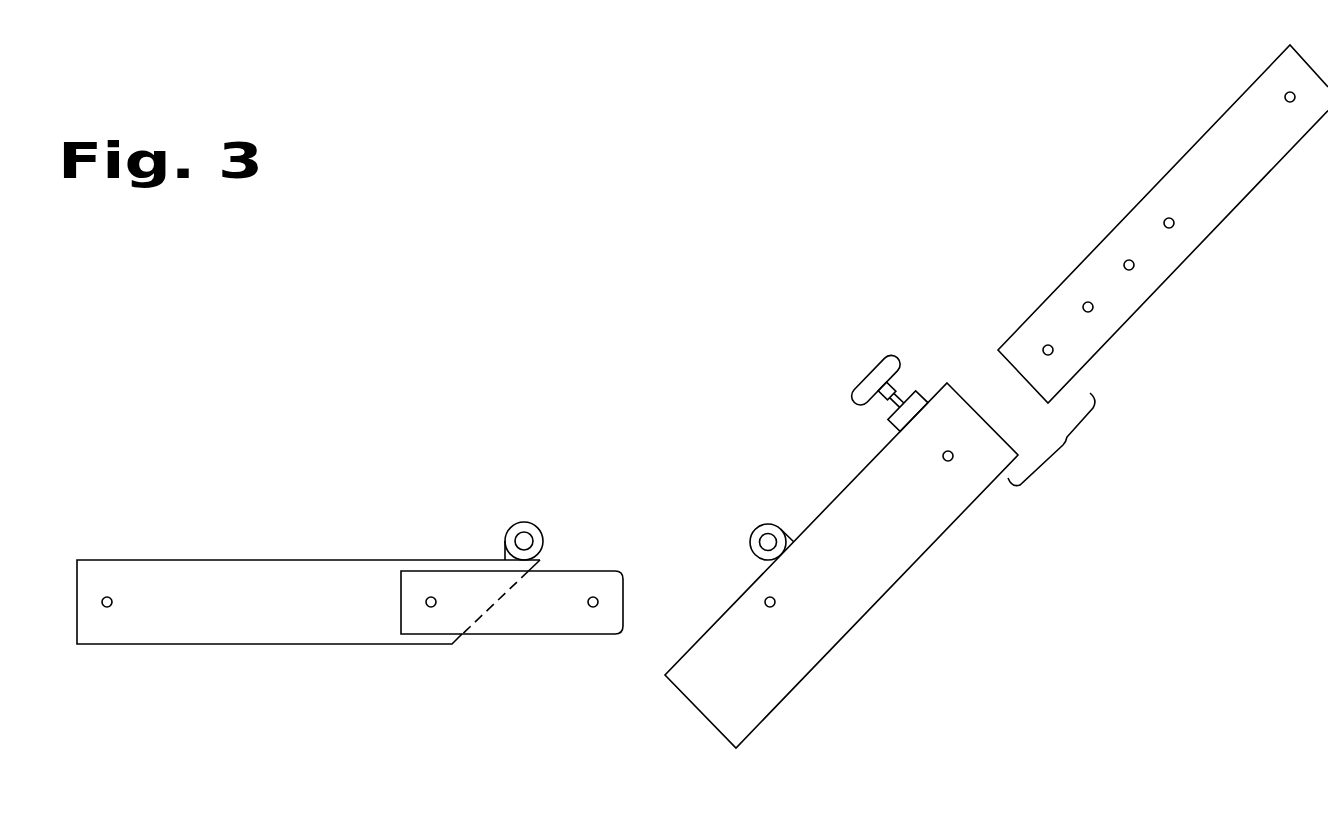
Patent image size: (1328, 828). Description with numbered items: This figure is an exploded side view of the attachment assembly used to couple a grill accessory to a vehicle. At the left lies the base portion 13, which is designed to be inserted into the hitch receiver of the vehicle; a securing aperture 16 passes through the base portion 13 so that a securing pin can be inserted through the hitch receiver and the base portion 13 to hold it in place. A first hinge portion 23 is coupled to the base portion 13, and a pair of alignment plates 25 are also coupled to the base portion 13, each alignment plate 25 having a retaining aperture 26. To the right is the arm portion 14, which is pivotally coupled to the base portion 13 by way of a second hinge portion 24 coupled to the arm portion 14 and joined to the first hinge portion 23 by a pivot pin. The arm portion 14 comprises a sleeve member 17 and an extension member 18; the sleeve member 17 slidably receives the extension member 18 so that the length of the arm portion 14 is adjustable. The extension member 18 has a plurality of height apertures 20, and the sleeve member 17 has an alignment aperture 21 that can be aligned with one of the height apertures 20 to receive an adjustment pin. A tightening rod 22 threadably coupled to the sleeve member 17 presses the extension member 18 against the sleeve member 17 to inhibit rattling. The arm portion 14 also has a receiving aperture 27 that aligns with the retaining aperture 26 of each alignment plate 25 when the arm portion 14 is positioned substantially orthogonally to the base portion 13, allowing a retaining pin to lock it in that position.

The base portion 13 is at (252, 593).
The securing aperture 16 is at (112, 600).
The first hinge portion 23 is at (524, 532).
The alignment plates 25 is at (530, 602).
The retaining aperture 26 is at (598, 600).
The sleeve member 17 is at (898, 525).
The receiving aperture 27 is at (775, 604).
The second hinge portion 24 is at (768, 535).
The alignment aperture 21 is at (948, 451).
The tightening rod 22 is at (885, 378).
The arm portion 14 is at (1063, 447).
The extension member 18 is at (1220, 193).
The height apertures 20 is at (1045, 347).